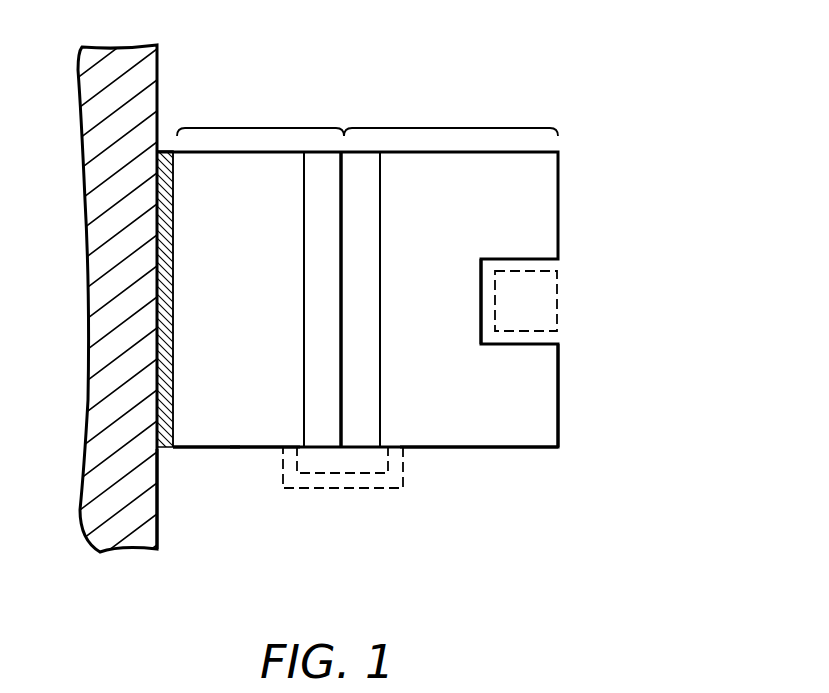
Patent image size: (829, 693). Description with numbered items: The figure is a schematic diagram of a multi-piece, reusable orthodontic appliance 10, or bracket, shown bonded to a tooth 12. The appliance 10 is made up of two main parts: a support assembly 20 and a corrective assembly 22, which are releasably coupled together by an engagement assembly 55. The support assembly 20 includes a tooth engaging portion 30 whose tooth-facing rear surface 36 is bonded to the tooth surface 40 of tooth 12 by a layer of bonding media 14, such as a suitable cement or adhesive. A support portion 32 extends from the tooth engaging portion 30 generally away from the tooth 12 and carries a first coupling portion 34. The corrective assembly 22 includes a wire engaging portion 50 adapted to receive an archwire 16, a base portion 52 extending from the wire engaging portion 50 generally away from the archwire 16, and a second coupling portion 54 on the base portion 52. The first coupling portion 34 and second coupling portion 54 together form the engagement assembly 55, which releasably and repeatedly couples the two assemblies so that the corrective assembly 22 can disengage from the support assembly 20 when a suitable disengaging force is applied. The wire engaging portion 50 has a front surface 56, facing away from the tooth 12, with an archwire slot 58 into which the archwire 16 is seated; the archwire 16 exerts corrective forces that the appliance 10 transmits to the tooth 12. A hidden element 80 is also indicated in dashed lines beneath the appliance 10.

The orthodontic appliance 10 is at (550, 90).
The tooth 12 is at (176, 72).
The bonding media 14 is at (165, 150).
The archwire 16 is at (556, 288).
The support assembly 20 is at (257, 128).
The corrective assembly 22 is at (460, 128).
The tooth engaging portion 30 is at (188, 463).
The support portion 32 is at (249, 463).
The first coupling portion 34 is at (318, 357).
The tooth-facing rear surface 36 is at (173, 326).
The tooth surface 40 is at (158, 522).
The wire engaging portion 50 is at (540, 461).
The base portion 52 is at (450, 461).
The second coupling portion 54 is at (370, 372).
The engagement assembly 55 is at (332, 499).
The front surface 56 is at (560, 386).
The archwire slot 58 is at (573, 335).
The hidden fastener 80 is at (340, 492).